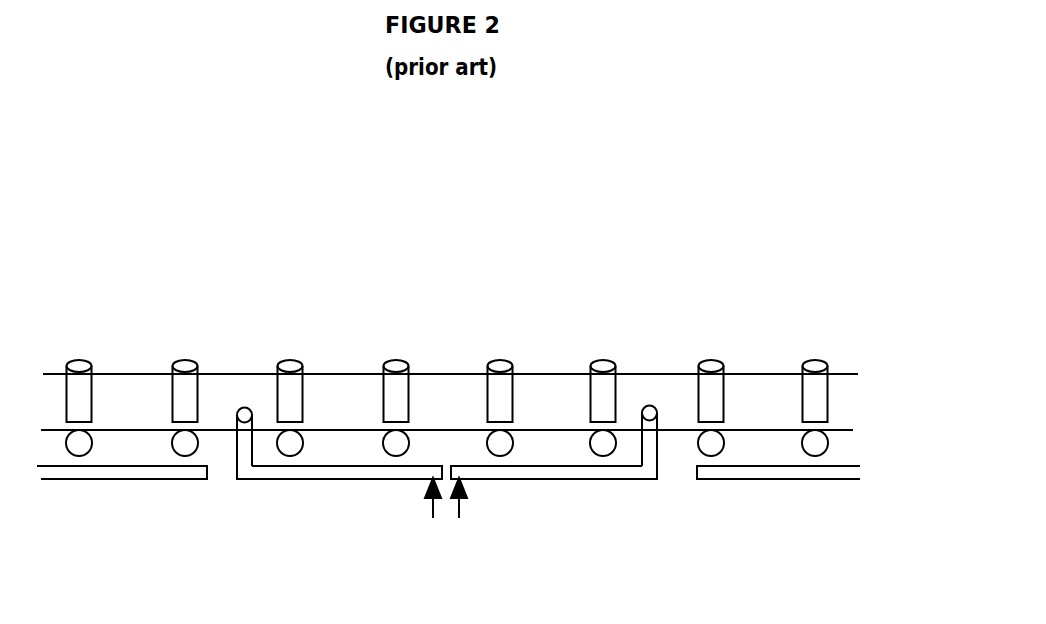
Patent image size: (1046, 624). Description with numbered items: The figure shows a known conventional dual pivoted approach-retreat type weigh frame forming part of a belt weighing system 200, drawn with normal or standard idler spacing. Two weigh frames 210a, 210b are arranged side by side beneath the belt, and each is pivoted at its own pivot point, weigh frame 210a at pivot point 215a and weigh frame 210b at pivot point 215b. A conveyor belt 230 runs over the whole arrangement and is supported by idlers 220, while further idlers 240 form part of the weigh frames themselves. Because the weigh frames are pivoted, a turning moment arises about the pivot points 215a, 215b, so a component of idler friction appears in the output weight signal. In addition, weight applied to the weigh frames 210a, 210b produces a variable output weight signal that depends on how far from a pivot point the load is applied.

The belt weighing system 200 is at (406, 193).
The weigh frame 210a is at (310, 470).
The weigh frame 210b is at (548, 468).
The pivot point 215a is at (247, 407).
The pivot point 215b is at (653, 405).
The idlers 220 is at (187, 362).
The conveyor belt 230 is at (770, 415).
The idlers 240 is at (293, 362).